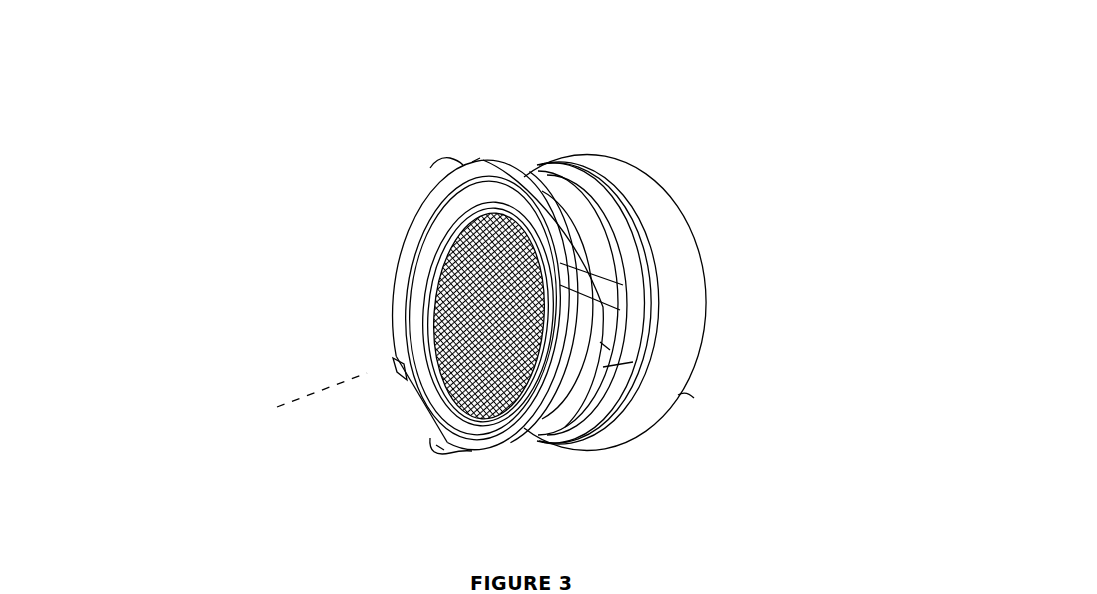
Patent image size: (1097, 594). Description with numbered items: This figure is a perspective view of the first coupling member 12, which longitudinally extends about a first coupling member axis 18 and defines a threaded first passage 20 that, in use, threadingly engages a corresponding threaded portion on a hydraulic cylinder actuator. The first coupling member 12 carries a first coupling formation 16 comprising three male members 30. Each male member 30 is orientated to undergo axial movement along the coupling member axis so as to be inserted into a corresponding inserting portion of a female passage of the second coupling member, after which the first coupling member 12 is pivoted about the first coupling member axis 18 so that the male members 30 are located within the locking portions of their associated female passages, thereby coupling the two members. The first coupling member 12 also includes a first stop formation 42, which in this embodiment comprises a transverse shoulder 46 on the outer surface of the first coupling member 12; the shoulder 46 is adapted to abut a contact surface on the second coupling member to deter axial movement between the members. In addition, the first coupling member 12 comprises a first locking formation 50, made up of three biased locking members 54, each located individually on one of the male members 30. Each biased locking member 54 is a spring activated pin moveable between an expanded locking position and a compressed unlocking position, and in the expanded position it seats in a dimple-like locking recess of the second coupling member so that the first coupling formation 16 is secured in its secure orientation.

The first coupling member 12 is at (243, 167).
The first coupling formation 16 is at (523, 146).
The first coupling member axis 18 is at (787, 233).
The threaded first passage 20 is at (390, 310).
The male member 30 is at (477, 158).
The first stop formation 42 is at (647, 158).
The transverse shoulder 46 is at (640, 243).
The first locking formation 50 is at (655, 353).
The biased locking member 54 is at (450, 158).